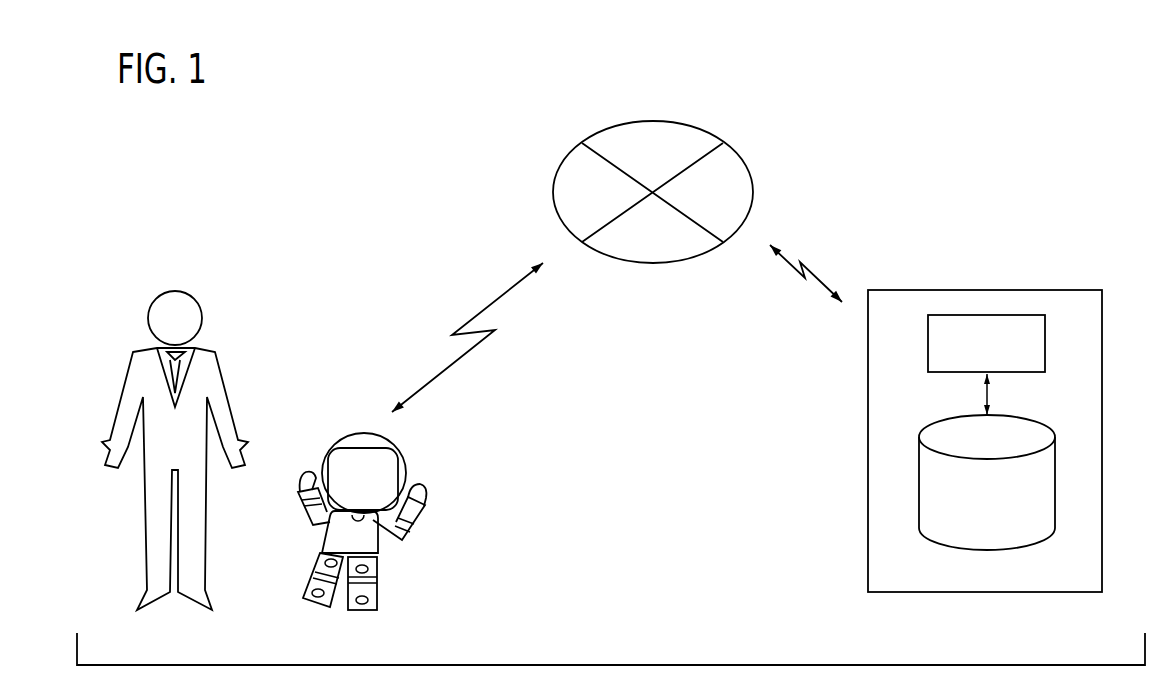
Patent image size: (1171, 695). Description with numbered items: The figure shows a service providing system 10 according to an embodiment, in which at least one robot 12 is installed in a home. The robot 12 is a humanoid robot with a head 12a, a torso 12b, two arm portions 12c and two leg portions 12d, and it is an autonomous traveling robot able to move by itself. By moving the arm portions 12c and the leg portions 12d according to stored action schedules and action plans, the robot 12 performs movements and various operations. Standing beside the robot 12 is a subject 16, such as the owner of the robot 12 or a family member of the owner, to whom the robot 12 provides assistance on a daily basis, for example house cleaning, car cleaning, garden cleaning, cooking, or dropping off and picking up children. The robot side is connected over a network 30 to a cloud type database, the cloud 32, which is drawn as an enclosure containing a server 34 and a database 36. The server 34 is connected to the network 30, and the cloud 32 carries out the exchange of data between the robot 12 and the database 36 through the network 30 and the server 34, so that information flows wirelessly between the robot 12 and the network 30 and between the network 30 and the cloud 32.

The service providing system 10 is at (321, 169).
The robot 12 is at (362, 497).
The head 12a is at (405, 461).
The torso 12b is at (368, 547).
The arm portions 12c is at (302, 480).
The leg portions 12d is at (312, 573).
The subject 16 is at (170, 292).
The network 30 is at (573, 152).
The cloud 32 is at (985, 417).
The server 34 is at (1028, 373).
The database 36 is at (1015, 545).